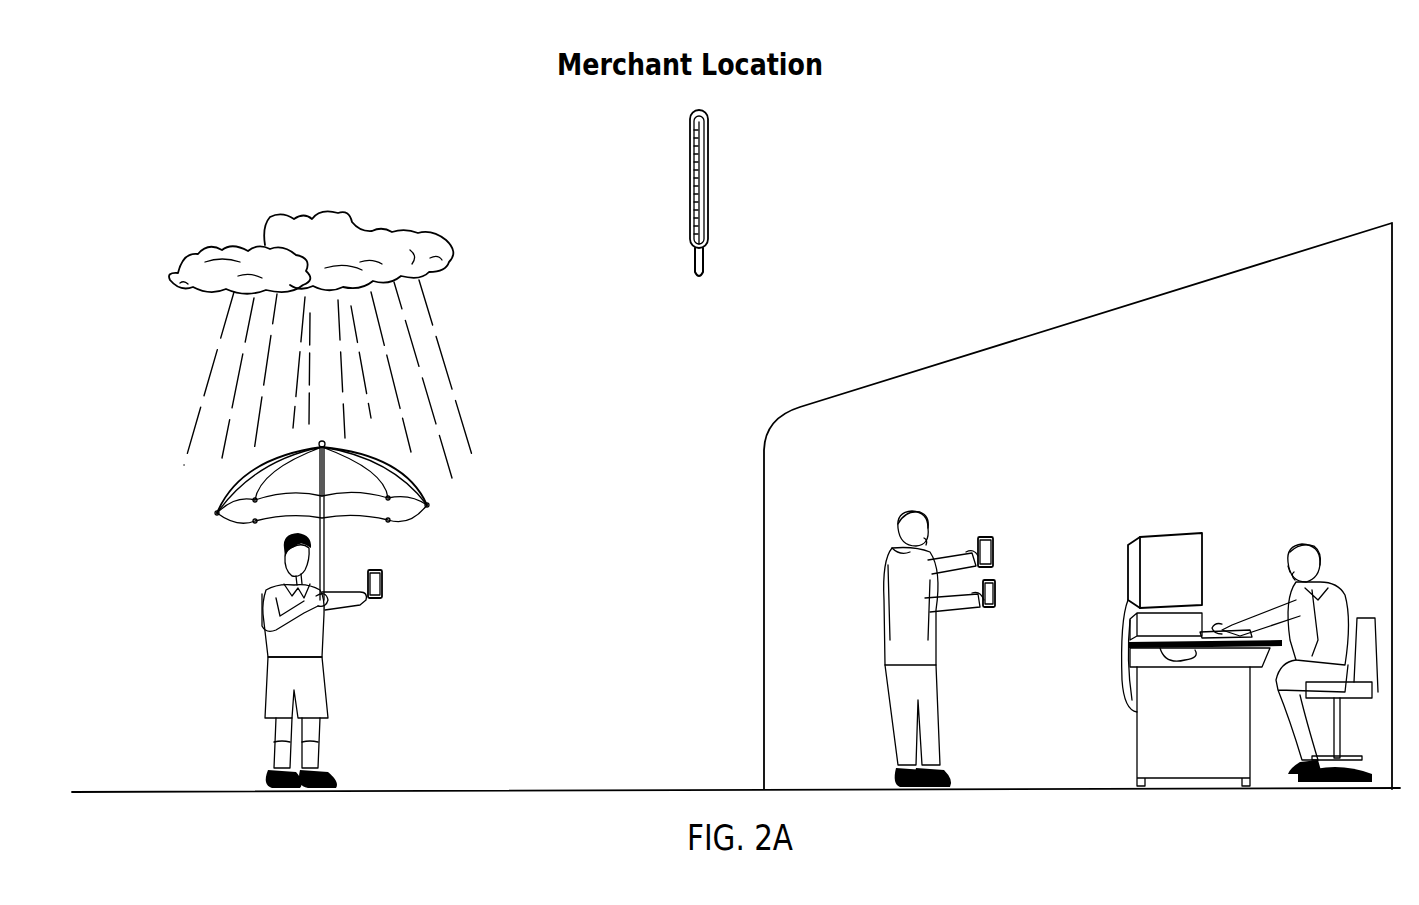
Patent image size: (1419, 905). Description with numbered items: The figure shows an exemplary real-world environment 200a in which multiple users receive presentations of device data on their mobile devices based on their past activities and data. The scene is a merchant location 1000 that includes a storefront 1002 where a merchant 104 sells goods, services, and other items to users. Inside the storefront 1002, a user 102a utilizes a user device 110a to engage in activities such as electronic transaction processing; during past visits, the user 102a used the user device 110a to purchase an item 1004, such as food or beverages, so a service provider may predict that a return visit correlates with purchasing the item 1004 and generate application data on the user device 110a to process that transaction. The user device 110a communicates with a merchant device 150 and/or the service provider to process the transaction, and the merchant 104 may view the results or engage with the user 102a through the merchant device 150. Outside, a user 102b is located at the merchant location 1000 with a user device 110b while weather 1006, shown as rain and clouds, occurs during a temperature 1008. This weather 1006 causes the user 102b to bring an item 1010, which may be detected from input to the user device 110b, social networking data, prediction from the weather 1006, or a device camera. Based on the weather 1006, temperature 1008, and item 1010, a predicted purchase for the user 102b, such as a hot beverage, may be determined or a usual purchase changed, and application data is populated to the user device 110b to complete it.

The merchant location 1000 is at (900, 77).
The environment 200a is at (1181, 84).
The storefront 1002 is at (1088, 317).
The item 1004 is at (987, 540).
The weather 1006 is at (427, 231).
The temperature 1008 is at (708, 197).
The item 1010 is at (324, 553).
The user 102a is at (912, 512).
The user 102b is at (283, 553).
The user device 110a is at (995, 588).
The user device 110b is at (382, 590).
The merchant device 150 is at (1170, 532).
The merchant 104 is at (1305, 542).